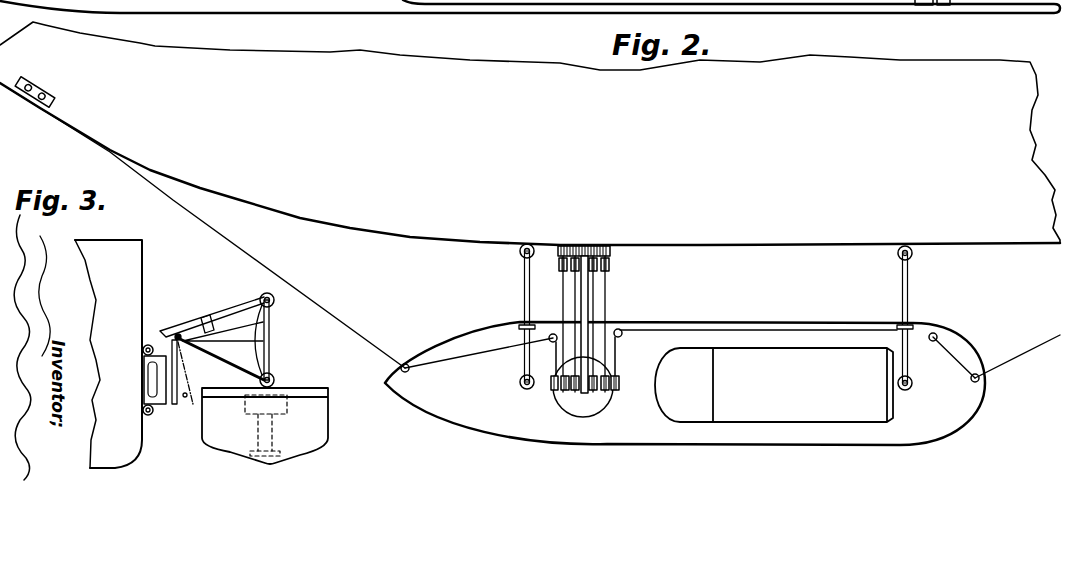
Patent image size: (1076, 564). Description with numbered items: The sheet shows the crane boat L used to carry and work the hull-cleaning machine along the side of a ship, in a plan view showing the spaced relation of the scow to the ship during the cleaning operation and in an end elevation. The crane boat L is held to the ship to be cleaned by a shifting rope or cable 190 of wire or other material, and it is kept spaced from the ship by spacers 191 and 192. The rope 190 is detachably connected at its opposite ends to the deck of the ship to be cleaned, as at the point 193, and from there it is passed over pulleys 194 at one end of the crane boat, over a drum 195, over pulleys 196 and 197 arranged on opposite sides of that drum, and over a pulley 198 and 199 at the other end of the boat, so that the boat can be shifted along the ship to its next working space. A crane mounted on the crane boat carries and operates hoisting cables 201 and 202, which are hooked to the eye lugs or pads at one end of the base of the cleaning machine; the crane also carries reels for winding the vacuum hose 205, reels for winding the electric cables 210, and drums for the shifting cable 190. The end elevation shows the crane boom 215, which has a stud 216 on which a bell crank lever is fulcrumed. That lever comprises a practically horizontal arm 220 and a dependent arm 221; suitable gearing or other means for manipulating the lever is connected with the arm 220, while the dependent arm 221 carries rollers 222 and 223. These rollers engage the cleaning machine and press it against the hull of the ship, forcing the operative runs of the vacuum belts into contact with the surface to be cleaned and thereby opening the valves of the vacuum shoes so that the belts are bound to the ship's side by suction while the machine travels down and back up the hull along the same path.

In FIG. 2, the shifting rope or cable 190 is at (1020, 372).
In FIG. 3, the shifting rope or cable 190 is at (313, 301).
In FIG. 2, the spacer 191 is at (527, 284).
In FIG. 2, the spacer 192 is at (902, 281).
In FIG. 2, the connection point on the ship deck 193 is at (50, 93).
In FIG. 2, the pulleys 194 is at (405, 363).
In FIG. 2, the drum 195 is at (583, 401).
In FIG. 2, the pulley 196 is at (551, 333).
In FIG. 2, the pulley 197 is at (622, 337).
In FIG. 2, the pulley 198 is at (936, 334).
In FIG. 2, the pulley 199 is at (951, 395).
In FIG. 2, the hoisting cable 201 is at (573, 280).
In FIG. 3, the hoisting cable 201 is at (233, 311).
In FIG. 2, the hoisting cable 202 is at (596, 296).
In FIG. 2, the vacuum hose 205 is at (606, 279).
In FIG. 2, the electric cable 210 is at (566, 353).
In FIG. 3, the crane boom 215 is at (247, 366).
In FIG. 3, the stud 216 is at (166, 330).
In FIG. 3, the horizontal arm 220 is at (212, 315).
In FIG. 3, the dependent arm 221 is at (182, 406).
In FIG. 3, the roller 222 is at (146, 363).
In FIG. 3, the roller 223 is at (150, 398).
In FIG. 2, the crane boat L is at (756, 362).
In FIG. 3, the crane boat L is at (310, 413).